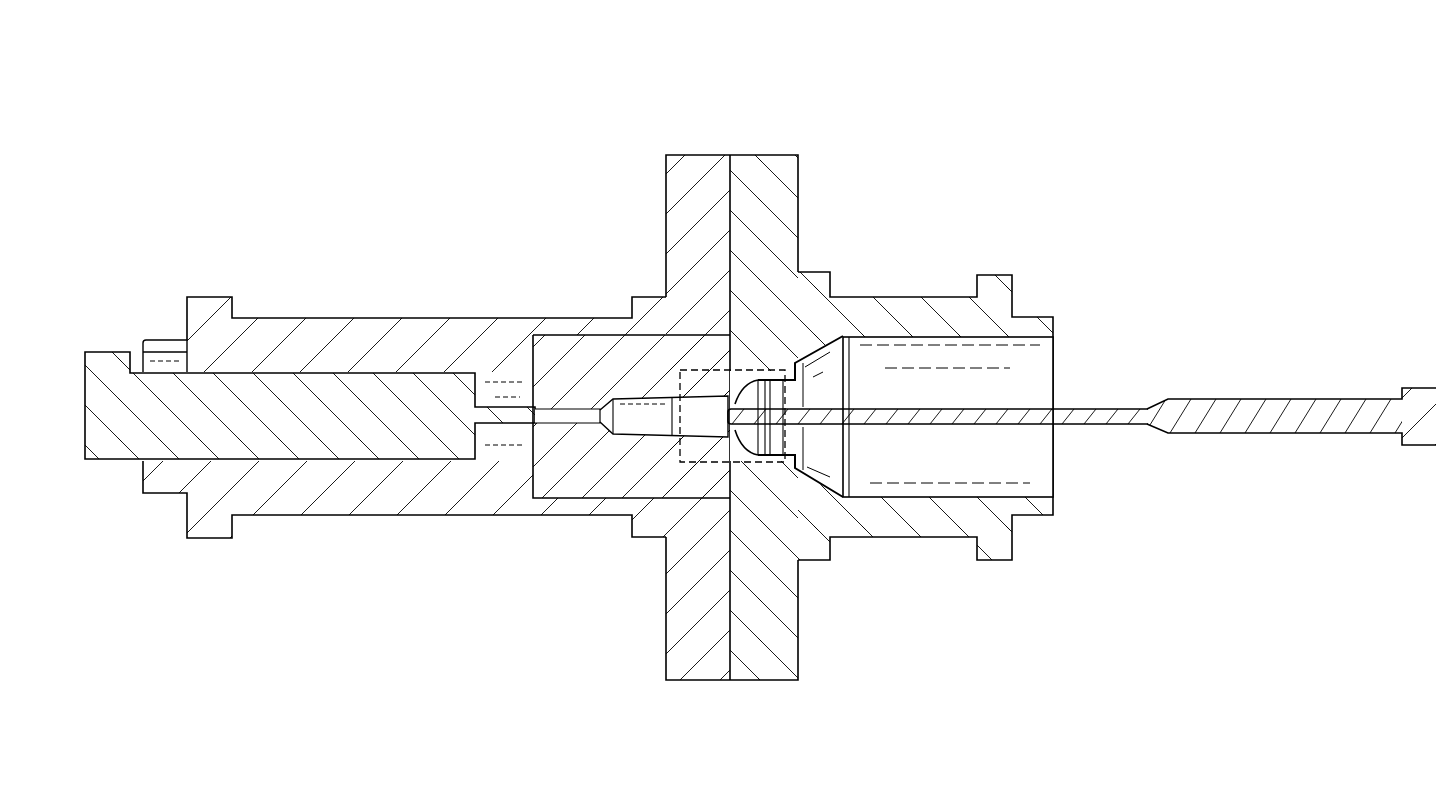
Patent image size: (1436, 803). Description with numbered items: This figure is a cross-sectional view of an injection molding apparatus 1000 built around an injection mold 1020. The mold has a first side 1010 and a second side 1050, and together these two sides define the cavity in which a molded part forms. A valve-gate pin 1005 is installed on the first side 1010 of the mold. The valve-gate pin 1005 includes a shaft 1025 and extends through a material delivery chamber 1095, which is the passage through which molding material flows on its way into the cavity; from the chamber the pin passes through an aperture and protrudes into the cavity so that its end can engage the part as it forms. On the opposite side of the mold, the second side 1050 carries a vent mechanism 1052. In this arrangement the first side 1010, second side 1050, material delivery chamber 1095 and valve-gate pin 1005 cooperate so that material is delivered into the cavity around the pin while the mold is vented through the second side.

The injection molding apparatus 1000 is at (1040, 87).
The valve-gate pin 1005 is at (1207, 382).
The first side 1010 is at (887, 538).
The injection mold 1020 is at (688, 356).
The shaft 1025 is at (1087, 407).
The second side 1050 is at (667, 187).
The vent mechanism 1052 is at (102, 362).
The material delivery chamber 1095 is at (1043, 460).